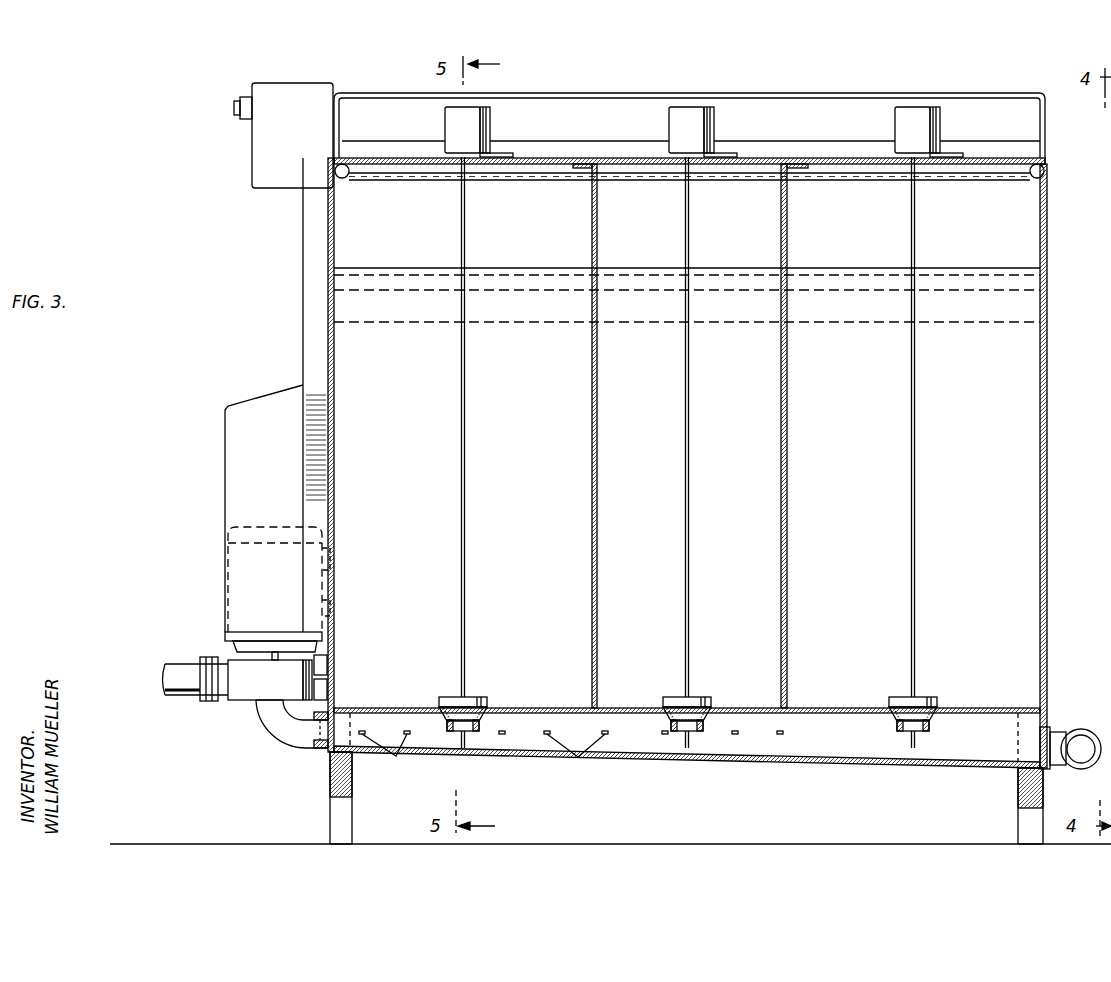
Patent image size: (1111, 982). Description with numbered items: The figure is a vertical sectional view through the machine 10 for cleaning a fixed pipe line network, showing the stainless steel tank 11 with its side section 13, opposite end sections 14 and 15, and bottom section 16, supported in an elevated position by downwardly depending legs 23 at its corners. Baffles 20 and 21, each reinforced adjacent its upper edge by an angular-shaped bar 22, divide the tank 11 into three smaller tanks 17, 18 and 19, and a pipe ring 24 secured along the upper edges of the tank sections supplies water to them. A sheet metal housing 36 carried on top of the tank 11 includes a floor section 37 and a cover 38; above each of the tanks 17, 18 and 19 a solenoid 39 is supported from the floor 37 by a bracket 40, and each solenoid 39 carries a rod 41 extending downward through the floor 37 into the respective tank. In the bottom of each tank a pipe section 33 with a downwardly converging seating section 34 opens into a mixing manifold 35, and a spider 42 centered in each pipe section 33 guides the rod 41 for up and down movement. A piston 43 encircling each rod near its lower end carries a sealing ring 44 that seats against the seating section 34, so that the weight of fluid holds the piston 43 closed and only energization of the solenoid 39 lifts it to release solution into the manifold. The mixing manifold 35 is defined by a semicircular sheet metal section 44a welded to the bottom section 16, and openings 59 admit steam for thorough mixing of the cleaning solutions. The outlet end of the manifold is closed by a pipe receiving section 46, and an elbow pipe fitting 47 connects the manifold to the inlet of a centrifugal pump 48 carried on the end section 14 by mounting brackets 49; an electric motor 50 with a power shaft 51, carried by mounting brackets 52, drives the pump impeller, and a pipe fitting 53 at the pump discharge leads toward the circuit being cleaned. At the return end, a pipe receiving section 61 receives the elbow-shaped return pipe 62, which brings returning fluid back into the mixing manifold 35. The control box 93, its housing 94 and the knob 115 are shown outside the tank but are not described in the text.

The machine 10 is at (1056, 284).
The tank 11 is at (1050, 362).
The side section 13 is at (1040, 206).
The end section 14 is at (334, 463).
The end section 15 is at (1050, 440).
The bottom section 16 is at (812, 708).
The tank 17 is at (524, 242).
The tank 18 is at (732, 222).
The tank 19 is at (971, 232).
The baffle 20 is at (592, 546).
The baffle 21 is at (781, 548).
The angular-shaped bar 22 is at (584, 170).
The legs 23 is at (340, 822).
The pipe ring 24 is at (412, 182).
The pipe section 33 is at (480, 726).
The seating section 34 is at (440, 720).
The mixing manifold 35 is at (802, 765).
The sheet metal housing 36 is at (1000, 92).
The floor section 37 is at (1004, 158).
The cover 38 is at (1045, 122).
The solenoid 39 is at (445, 122).
The bracket 40 is at (491, 126).
The rod 41 is at (689, 639).
The spider 42 is at (466, 735).
The piston 43 is at (472, 698).
The sealing ring 44 is at (442, 703).
The sheet metal section 44a is at (890, 764).
The pipe receiving section 46 is at (318, 748).
The pipe fitting 47 is at (278, 728).
The pump 48 is at (270, 680).
The mounting brackets 49 is at (326, 690).
The electric motor 50 is at (232, 644).
The power shaft 51 is at (274, 653).
The mounting brackets 52 is at (330, 612).
The pipe fitting 53 is at (209, 701).
The openings 59 is at (806, 733).
The pipe receiving section 61 is at (1046, 720).
The return pipe 62 is at (1086, 730).
The control box 93 is at (340, 87).
The control housing 94 is at (255, 155).
The control knob 115 is at (234, 106).